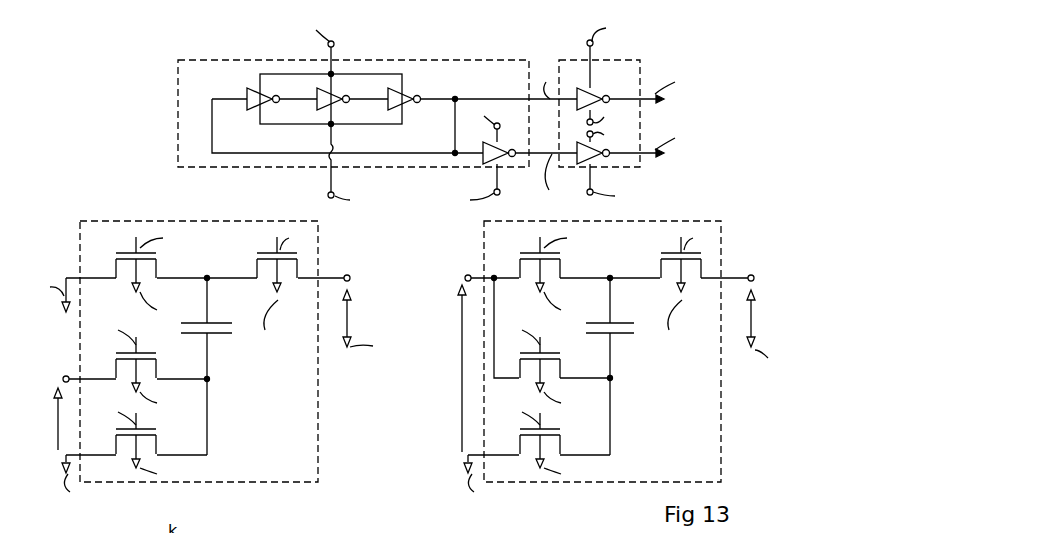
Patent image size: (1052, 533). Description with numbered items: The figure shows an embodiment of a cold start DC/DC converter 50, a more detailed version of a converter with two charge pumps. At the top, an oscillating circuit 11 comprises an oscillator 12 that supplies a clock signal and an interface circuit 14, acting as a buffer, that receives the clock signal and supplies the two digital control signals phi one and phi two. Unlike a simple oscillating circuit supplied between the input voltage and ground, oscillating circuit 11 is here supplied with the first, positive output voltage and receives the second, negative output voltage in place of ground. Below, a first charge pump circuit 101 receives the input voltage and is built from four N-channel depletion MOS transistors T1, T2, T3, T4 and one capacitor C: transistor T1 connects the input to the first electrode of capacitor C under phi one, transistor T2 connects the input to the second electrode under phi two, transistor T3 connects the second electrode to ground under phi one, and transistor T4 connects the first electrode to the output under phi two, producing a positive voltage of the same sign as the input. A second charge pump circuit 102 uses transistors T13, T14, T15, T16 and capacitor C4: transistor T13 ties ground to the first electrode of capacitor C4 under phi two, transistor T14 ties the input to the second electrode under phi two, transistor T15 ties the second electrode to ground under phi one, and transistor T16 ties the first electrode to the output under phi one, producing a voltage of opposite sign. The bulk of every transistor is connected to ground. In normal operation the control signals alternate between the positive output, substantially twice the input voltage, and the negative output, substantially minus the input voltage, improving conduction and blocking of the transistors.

The oscillating circuit 11 is at (154, 68).
The oscillator 12 is at (260, 60).
The interface circuit 14 is at (612, 60).
The converter 50 is at (716, 70).
The charge pump circuit 101 is at (724, 238).
The charge pump circuit 102 is at (321, 238).
The N-channel depletion MOS transistor T1 is at (562, 274).
The N-channel depletion MOS transistor T2 is at (562, 376).
The N-channel depletion MOS transistor T3 is at (562, 452).
The N-channel depletion MOS transistor T4 is at (659, 268).
The N-channel depletion MOS transistor T13 is at (158, 276).
The N-channel depletion MOS transistor T14 is at (158, 376).
The N-channel depletion MOS transistor T15 is at (158, 452).
The N-channel depletion MOS transistor T16 is at (255, 268).
The capacitor C is at (634, 334).
The capacitor C4 is at (232, 334).